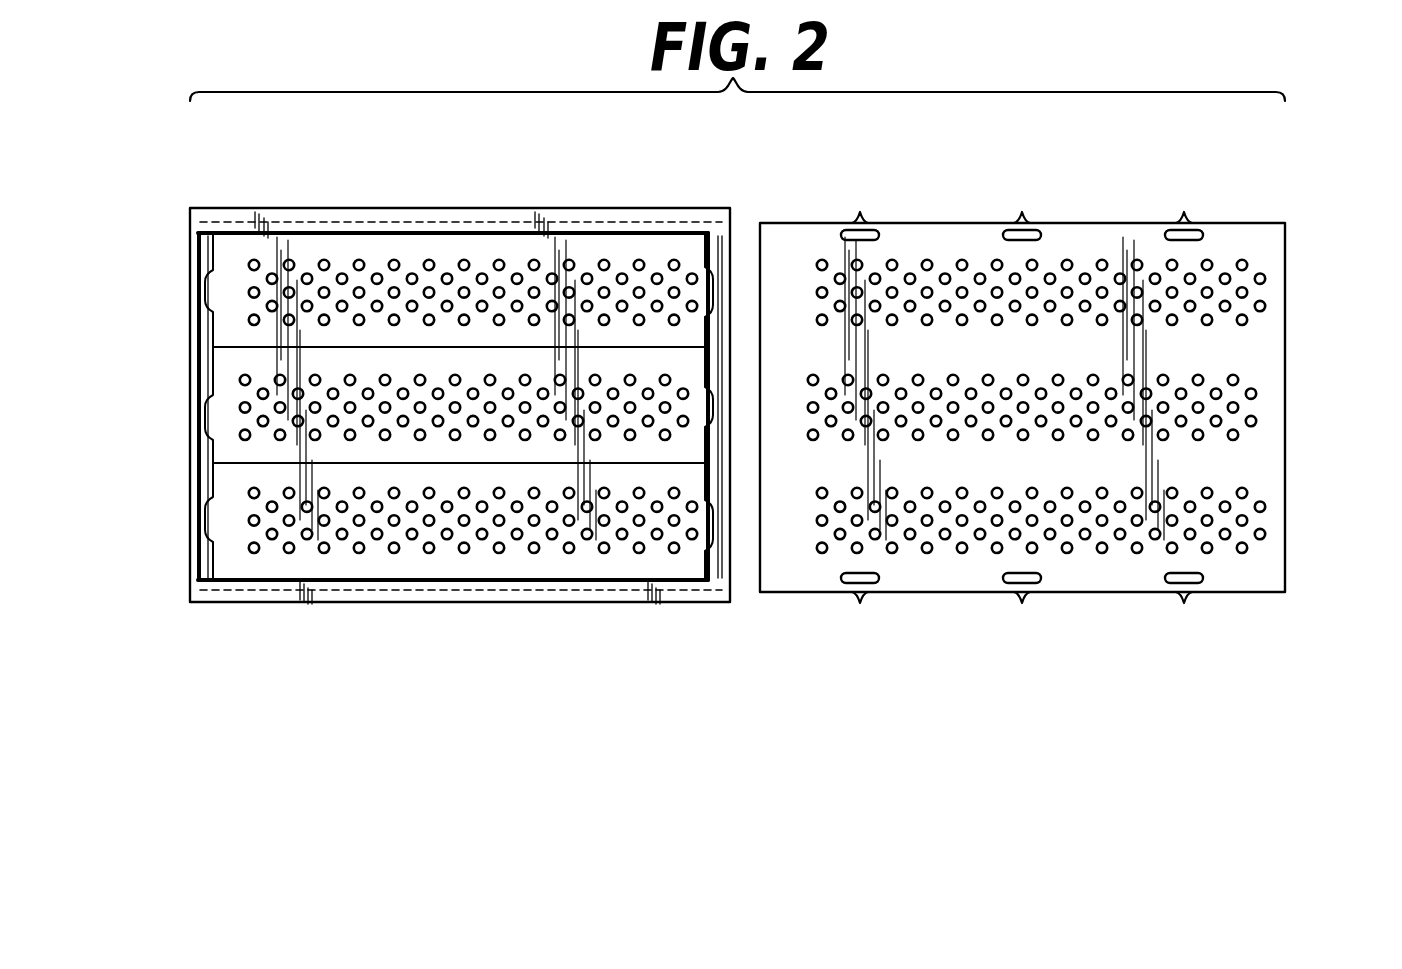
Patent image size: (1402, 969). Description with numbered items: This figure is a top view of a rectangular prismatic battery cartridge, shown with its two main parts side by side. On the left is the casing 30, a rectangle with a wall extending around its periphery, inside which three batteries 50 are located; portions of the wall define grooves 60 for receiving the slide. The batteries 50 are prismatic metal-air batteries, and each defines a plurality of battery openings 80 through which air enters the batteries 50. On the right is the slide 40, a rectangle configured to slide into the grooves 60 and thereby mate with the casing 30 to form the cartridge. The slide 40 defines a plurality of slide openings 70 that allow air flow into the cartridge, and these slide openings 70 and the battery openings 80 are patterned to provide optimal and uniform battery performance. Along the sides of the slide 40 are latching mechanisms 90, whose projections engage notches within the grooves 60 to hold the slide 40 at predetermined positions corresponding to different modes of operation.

The casing 30 is at (190, 272).
The slide 40 is at (1285, 400).
The batteries 50 is at (225, 493).
The grooves 60 is at (706, 225).
The slide openings 70 is at (1260, 279).
The battery openings 80 is at (395, 553).
The latching mechanisms 90 is at (1027, 218).